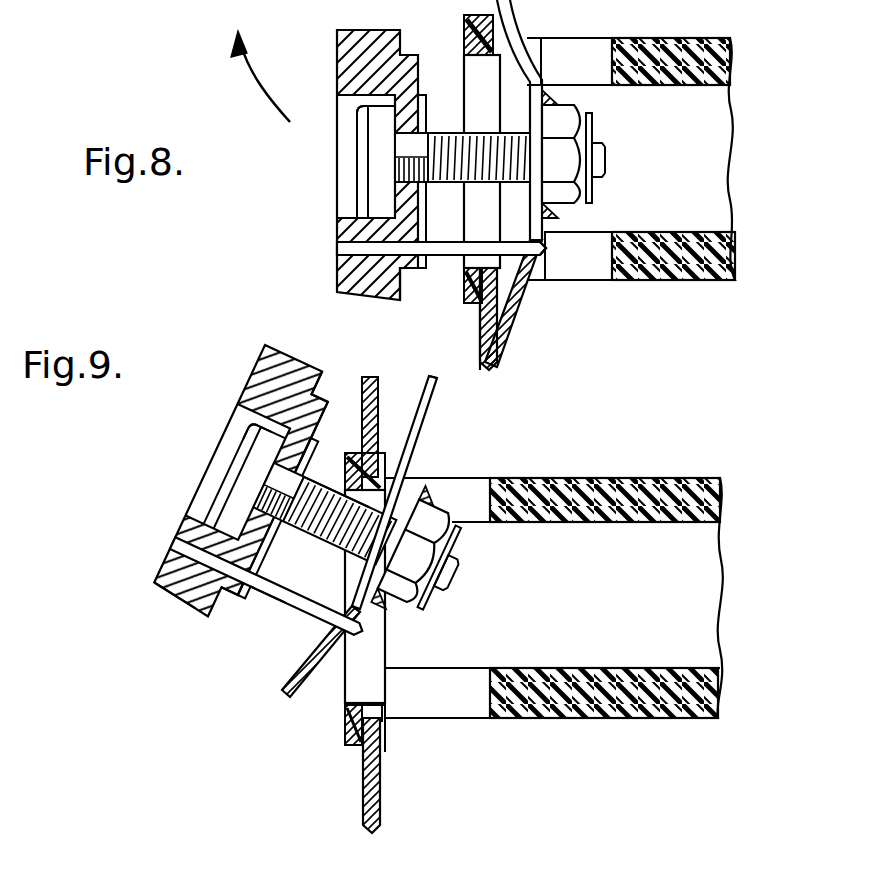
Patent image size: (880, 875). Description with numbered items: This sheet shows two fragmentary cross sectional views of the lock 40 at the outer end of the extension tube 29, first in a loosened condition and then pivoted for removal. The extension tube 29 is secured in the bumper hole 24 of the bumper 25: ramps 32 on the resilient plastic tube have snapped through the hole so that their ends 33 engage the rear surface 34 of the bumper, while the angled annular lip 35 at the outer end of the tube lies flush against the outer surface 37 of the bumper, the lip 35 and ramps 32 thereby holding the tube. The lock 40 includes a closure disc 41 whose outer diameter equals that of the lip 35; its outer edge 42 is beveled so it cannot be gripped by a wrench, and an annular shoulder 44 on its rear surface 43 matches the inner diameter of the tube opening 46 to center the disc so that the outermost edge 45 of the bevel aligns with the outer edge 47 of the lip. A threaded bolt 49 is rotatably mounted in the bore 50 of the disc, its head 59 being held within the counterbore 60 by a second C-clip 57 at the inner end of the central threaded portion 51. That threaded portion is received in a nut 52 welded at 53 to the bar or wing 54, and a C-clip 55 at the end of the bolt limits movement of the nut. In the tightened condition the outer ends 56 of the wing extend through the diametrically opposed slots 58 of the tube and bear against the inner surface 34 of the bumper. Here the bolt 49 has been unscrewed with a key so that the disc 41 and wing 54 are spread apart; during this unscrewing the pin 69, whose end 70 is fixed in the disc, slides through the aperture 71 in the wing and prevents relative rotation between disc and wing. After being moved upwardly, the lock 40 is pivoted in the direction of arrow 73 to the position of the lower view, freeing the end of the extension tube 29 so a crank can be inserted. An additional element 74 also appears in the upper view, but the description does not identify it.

In FIG. 8, the bumper hole 24 is at (521, 45).
In FIG. 9, the bumper hole 24 is at (397, 470).
In FIG. 9, the bumper 25 is at (381, 385).
In FIG. 8, the extension tube 29 is at (706, 38).
In FIG. 9, the extension tube 29 is at (684, 478).
In FIG. 8, the ramps 32 is at (512, 303).
In FIG. 9, the ramps 32 is at (387, 462).
In FIG. 8, the ends of ramps 33 is at (511, 328).
In FIG. 9, the ends of ramps 33 is at (365, 432).
In FIG. 8, the rear surface of bumper 34 is at (498, 368).
In FIG. 9, the rear surface of bumper 34 is at (385, 810).
In FIG. 8, the annular lip 35 is at (472, 304).
In FIG. 9, the annular lip 35 is at (350, 745).
In FIG. 8, the outer surface of bumper 37 is at (482, 345).
In FIG. 9, the outer surface of bumper 37 is at (362, 805).
In FIG. 9, the lock 40 is at (170, 590).
In FIG. 9, the closure disc 41 is at (163, 607).
In FIG. 8, the outer edge of disc 42 is at (350, 297).
In FIG. 9, the outer edge of disc 42 is at (266, 346).
In FIG. 9, the rear surface of disc 43 is at (333, 405).
In FIG. 9, the annular shoulder 44 is at (235, 593).
In FIG. 8, the outermost edge of bevel 45 is at (401, 298).
In FIG. 9, the outermost edge of bevel 45 is at (322, 362).
In FIG. 9, the opening of extension tube 46 is at (347, 722).
In FIG. 9, the outer edge of lip 47 is at (355, 765).
In FIG. 8, the threaded bolt 49 is at (481, 127).
In FIG. 9, the threaded bolt 49 is at (305, 540).
In FIG. 8, the bore 50 is at (396, 151).
In FIG. 9, the bore 50 is at (240, 468).
In FIG. 8, the central threaded portion 51 is at (447, 126).
In FIG. 9, the central threaded portion 51 is at (320, 600).
In FIG. 8, the nut 52 is at (563, 108).
In FIG. 9, the nut 52 is at (402, 612).
In FIG. 8, the weld 53 is at (545, 92).
In FIG. 9, the weld 53 is at (440, 478).
In FIG. 9, the bar or wing 54 is at (438, 410).
In FIG. 8, the C-clip 55 is at (593, 124).
In FIG. 9, the C-clip 55 is at (456, 550).
In FIG. 8, the outer ends of wing 56 is at (506, 349).
In FIG. 9, the outer ends of wing 56 is at (437, 428).
In FIG. 8, the second C-clip 57 is at (399, 96).
In FIG. 9, the second C-clip 57 is at (318, 468).
In FIG. 8, the slots 58 is at (613, 40).
In FIG. 9, the slots 58 is at (492, 478).
In FIG. 8, the head of bolt 59 is at (372, 177).
In FIG. 9, the head of bolt 59 is at (240, 487).
In FIG. 8, the counterbore 60 is at (356, 110).
In FIG. 9, the counterbore 60 is at (258, 520).
In FIG. 8, the pin 69 is at (443, 241).
In FIG. 9, the pin 69 is at (275, 600).
In FIG. 8, the end of pin 70 is at (336, 248).
In FIG. 9, the end of pin 70 is at (177, 548).
In FIG. 8, the aperture 71 is at (548, 248).
In FIG. 9, the aperture 71 is at (371, 596).
In FIG. 8, the arrow 73 is at (258, 92).
In FIG. 8, the spacer 74 is at (482, 161).